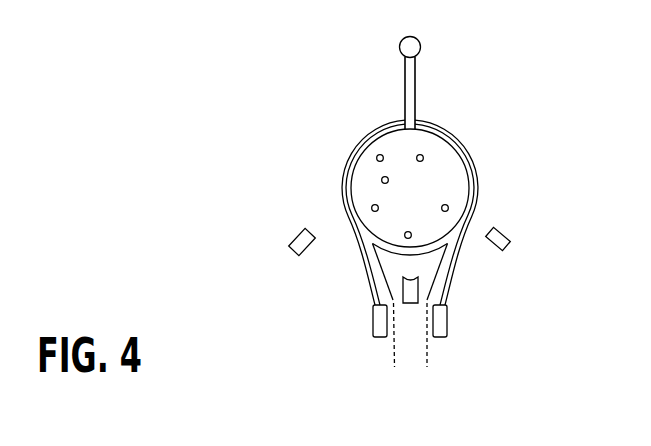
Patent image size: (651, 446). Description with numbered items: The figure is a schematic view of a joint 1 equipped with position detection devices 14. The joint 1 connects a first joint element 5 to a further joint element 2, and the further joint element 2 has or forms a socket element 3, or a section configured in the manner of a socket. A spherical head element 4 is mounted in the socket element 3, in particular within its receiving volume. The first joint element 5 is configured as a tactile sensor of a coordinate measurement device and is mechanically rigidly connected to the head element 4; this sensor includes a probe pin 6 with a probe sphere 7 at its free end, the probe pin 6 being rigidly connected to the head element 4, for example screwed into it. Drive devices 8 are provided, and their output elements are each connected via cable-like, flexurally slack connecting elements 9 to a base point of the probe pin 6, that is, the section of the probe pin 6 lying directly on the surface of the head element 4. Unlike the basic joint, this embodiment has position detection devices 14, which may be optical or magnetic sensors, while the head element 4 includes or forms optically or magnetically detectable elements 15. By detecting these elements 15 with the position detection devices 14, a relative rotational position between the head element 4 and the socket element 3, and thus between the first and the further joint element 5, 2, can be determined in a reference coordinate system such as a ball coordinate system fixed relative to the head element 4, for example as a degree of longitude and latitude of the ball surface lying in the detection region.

The joint 1 is at (294, 301).
The further joint element 2 is at (407, 330).
The socket element 3 is at (420, 265).
The spherical head element 4 is at (447, 180).
The first joint element 5 is at (415, 92).
The probe pin 6 is at (415, 73).
The probe sphere 7 is at (420, 43).
The drive devices 8 is at (383, 317).
The connecting elements 9 is at (355, 150).
The position detection devices 14 is at (293, 240).
The optically or magnetically detectable elements 15 is at (423, 157).